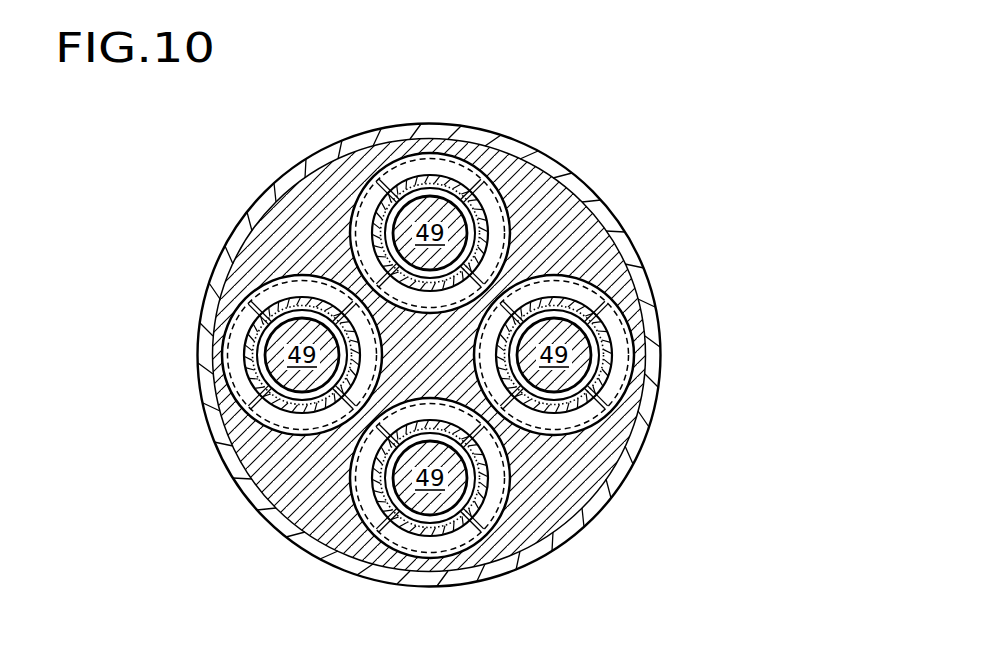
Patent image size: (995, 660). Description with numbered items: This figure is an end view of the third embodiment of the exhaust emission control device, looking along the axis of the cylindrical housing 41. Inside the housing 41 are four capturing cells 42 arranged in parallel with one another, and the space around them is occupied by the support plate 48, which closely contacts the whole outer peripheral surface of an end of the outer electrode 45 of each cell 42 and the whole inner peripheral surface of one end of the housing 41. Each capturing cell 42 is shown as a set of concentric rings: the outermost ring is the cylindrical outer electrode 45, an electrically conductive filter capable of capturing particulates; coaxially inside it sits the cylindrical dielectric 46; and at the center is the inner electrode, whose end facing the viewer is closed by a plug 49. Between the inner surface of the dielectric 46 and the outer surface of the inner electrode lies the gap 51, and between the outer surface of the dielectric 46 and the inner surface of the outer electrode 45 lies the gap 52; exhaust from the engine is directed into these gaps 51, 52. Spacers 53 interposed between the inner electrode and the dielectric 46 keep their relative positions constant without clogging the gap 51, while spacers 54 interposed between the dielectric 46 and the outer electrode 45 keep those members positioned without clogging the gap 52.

The cylindrical housing 41 is at (300, 178).
The capturing cell 42 is at (360, 178).
The cylindrical outer electrode 45 is at (510, 245).
The cylindrical dielectric 46 is at (505, 208).
The support plate 48 is at (290, 487).
The plug 49 is at (428, 355).
The gap 51 is at (450, 193).
The gap 52 is at (428, 168).
The spacer 53 is at (497, 195).
The spacer 54 is at (470, 165).